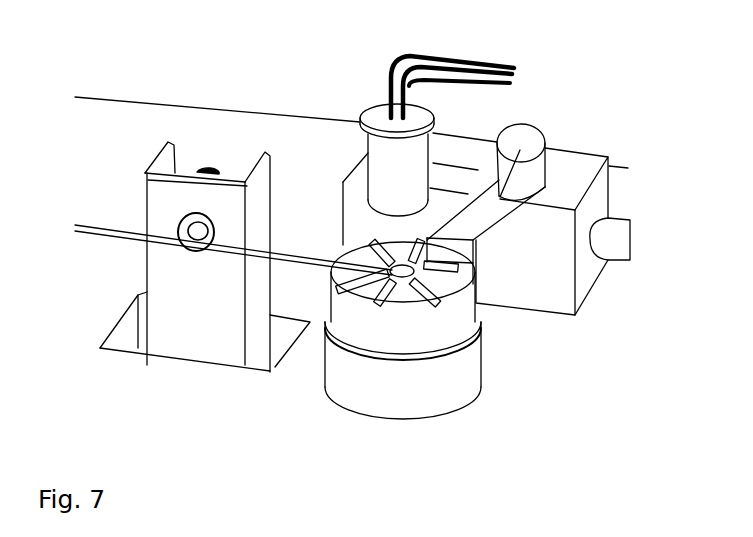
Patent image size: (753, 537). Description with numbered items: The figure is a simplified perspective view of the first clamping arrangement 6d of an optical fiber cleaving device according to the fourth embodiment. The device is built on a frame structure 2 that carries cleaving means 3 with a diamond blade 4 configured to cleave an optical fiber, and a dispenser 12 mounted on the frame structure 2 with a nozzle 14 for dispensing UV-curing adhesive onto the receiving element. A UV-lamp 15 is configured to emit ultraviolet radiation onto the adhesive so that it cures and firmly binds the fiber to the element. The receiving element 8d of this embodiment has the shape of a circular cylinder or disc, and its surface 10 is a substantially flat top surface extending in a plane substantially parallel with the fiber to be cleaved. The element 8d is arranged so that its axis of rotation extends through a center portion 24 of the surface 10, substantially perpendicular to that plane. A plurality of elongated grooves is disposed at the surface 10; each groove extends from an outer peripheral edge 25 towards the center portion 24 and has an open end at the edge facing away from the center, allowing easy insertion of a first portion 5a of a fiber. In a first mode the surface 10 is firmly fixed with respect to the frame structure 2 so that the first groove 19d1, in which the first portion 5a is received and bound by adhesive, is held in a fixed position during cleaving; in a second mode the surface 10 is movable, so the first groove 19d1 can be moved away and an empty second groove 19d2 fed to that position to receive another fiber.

The frame structure 2 is at (107, 100).
The cleaving means 3 is at (268, 176).
The diamond blade 4 is at (203, 228).
The first portion of the fiber 5a is at (331, 281).
The first clamping arrangement 6d is at (335, 421).
The receiving element 8d is at (443, 323).
The surface 10 is at (443, 285).
The dispenser 12 is at (528, 128).
The nozzle 14 is at (453, 268).
The UV-lamp 15 is at (457, 53).
The first groove 19d1 is at (362, 260).
The second groove 19d2 is at (358, 303).
The center portion 24 is at (403, 278).
The outer peripheral edge 25 is at (333, 292).